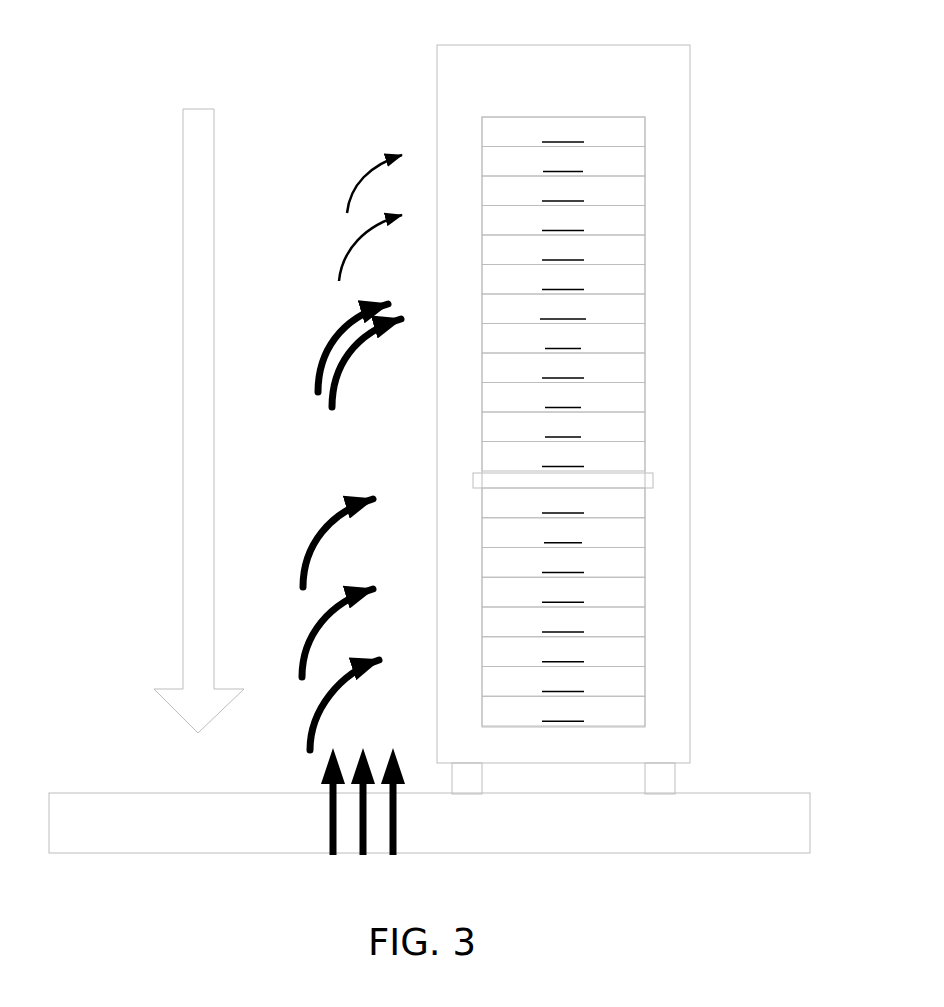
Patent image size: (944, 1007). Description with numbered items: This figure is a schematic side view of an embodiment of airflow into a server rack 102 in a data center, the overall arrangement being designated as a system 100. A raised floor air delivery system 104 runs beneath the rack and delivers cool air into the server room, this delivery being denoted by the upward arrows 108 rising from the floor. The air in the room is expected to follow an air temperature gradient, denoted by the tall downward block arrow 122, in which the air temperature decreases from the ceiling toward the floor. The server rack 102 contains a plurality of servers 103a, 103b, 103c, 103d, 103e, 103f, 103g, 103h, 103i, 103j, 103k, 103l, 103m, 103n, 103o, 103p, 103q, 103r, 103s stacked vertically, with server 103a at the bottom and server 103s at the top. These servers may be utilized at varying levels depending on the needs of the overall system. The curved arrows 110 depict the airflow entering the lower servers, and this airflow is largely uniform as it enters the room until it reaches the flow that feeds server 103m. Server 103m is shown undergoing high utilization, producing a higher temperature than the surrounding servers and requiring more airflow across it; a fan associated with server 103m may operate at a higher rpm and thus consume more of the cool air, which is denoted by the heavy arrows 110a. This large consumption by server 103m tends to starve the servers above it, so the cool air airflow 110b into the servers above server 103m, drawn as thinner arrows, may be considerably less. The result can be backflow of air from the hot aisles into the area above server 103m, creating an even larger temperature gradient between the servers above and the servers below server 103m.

The data center cooling system 100 is at (133, 56).
The server rack 102 is at (437, 88).
The server 103a is at (563, 711).
The server 103b is at (563, 682).
The server 103c is at (563, 652).
The server 103d is at (563, 607).
The server 103e is at (563, 563).
The server 103f is at (563, 533).
The server 103g is at (563, 503).
The server 103h is at (563, 457).
The server 103i is at (563, 427).
The server 103j is at (563, 398).
The server 103k is at (563, 368).
The server 103l is at (563, 339).
The server 103m is at (563, 309).
The server 103n is at (563, 280).
The server 103o is at (563, 250).
The server 103p is at (563, 221).
The server 103q is at (563, 191).
The server 103r is at (563, 162).
The server 103s is at (563, 132).
The raised floor air delivery system 104 is at (187, 793).
The arrows denoting cool air delivery 108 is at (330, 818).
The arrows depicting airflow entering the servers 110 is at (306, 534).
The arrows denoting higher cool air consumption 110a is at (330, 365).
The cool air airflow into the servers above server 103m 110b is at (350, 187).
The block arrow denoting air temperature gradient 122 is at (183, 307).